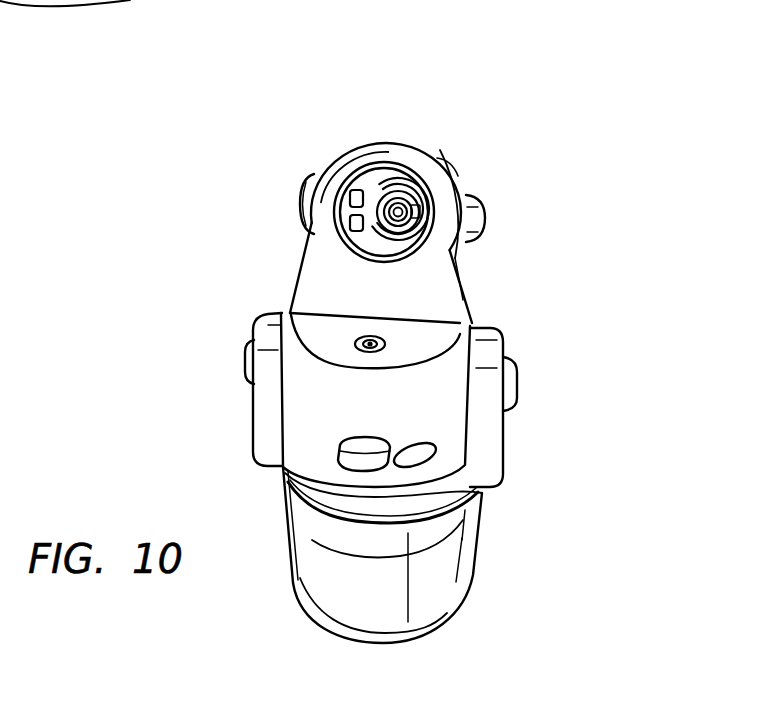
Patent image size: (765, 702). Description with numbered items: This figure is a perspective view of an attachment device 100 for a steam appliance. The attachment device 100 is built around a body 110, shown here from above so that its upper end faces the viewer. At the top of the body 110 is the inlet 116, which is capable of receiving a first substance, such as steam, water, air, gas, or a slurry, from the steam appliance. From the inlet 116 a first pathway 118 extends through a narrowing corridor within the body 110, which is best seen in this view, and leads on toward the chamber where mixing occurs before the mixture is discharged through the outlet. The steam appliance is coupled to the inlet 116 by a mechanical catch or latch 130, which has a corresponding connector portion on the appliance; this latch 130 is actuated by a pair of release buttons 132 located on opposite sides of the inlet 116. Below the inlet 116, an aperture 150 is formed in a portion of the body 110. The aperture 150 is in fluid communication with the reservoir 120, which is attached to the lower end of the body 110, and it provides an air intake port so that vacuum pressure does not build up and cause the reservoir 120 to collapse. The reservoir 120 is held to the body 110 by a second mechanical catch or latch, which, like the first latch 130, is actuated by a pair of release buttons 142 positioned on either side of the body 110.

The attachment device 100 is at (548, 109).
The body 110 is at (440, 300).
The inlet 116 is at (380, 180).
The first pathway 118 is at (405, 208).
The reservoir 120 is at (453, 577).
The latch 130 is at (350, 222).
The release buttons 132 is at (308, 187).
The release buttons 142 is at (250, 347).
The aperture 150 is at (358, 348).